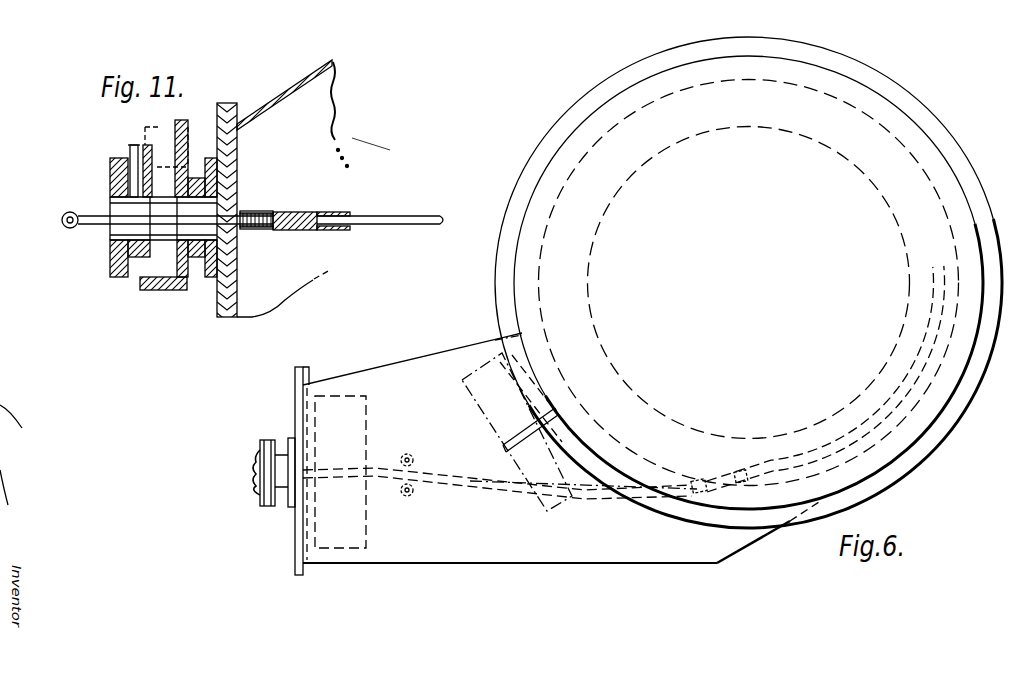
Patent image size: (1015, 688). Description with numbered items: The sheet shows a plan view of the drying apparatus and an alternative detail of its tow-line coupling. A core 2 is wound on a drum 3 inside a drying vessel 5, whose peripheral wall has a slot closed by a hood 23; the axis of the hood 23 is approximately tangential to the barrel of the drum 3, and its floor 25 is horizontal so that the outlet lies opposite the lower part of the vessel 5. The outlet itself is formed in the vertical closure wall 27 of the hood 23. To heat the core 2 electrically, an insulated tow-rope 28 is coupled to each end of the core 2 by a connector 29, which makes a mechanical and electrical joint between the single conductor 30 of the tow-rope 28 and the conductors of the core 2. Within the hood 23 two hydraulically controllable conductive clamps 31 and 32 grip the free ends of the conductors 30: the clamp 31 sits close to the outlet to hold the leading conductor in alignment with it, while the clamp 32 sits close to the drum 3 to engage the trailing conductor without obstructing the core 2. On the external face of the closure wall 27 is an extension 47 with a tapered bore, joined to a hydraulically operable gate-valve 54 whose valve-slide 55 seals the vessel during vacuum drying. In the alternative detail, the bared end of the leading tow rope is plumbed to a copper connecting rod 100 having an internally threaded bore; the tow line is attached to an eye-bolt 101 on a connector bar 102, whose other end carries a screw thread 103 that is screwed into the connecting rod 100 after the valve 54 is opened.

In FIG. 6, the core 2 is at (889, 447).
In FIG. 6, the drum 3 is at (877, 173).
In FIG. 6, the drying vessel 5 is at (960, 147).
In FIG. 6, the hood 23 is at (428, 552).
In FIG. 6, the floor of the hood 25 is at (625, 565).
In FIG. 11, the vertical closure wall 27 is at (233, 153).
In FIG. 6, the insulated tow-rope 28 is at (502, 492).
In FIG. 6, the connector 29 is at (718, 488).
In FIG. 11, the conductor 30 is at (362, 217).
In FIG. 6, the clamp 31 is at (334, 400).
In FIG. 6, the clamp 32 is at (480, 378).
In FIG. 6, the extension 47 is at (285, 457).
In FIG. 11, the gate-valve 54 is at (176, 119).
In FIG. 11, the valve-slide 55 is at (177, 180).
In FIG. 11, the connecting rod 100 is at (295, 213).
In FIG. 11, the eye-bolt 101 is at (72, 229).
In FIG. 11, the connector bar 102 is at (170, 222).
In FIG. 11, the screw thread 103 is at (252, 213).